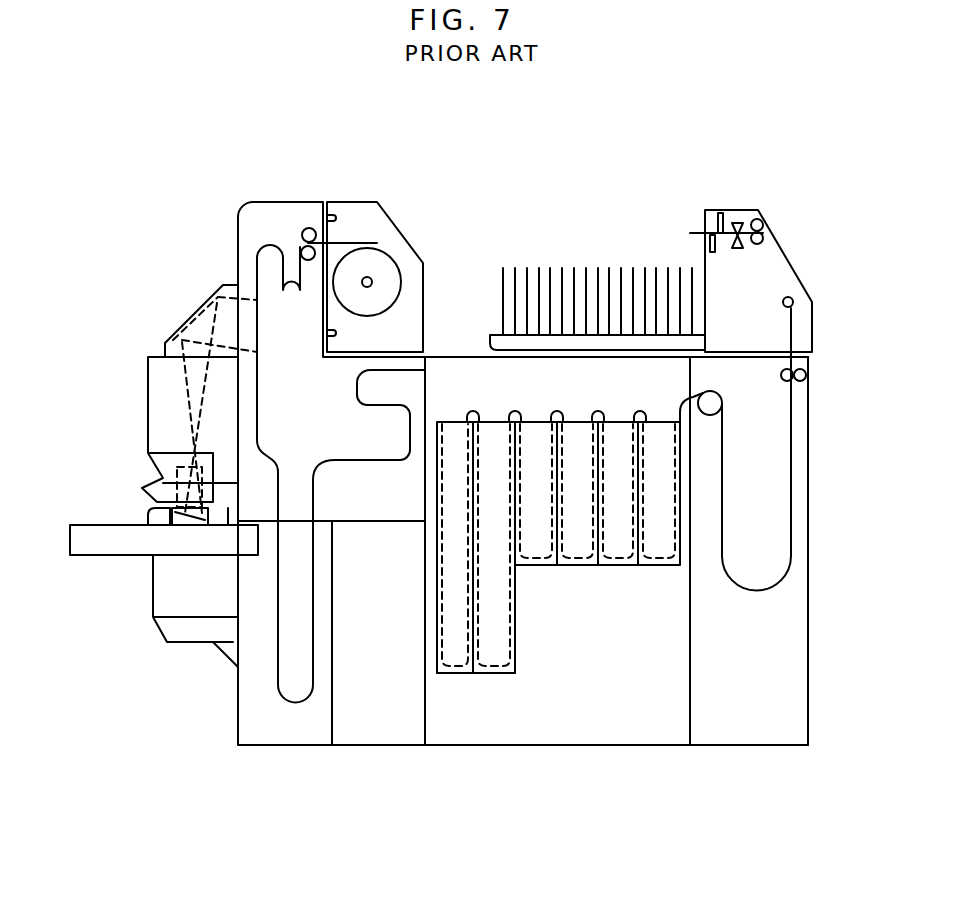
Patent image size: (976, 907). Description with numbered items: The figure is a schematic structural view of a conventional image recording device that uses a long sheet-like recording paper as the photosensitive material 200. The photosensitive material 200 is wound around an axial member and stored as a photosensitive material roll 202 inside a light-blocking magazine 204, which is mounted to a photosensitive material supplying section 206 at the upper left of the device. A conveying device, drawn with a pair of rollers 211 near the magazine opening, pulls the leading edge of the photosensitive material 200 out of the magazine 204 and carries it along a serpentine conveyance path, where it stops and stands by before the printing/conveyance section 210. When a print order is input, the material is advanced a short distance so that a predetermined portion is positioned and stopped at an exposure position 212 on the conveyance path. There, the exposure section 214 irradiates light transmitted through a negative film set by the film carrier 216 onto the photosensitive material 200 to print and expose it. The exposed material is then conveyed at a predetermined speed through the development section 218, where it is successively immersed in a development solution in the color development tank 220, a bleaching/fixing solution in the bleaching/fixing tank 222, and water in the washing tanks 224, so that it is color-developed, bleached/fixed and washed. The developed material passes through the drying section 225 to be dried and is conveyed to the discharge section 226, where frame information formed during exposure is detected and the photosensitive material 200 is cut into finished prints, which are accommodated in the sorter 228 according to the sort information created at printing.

The photosensitive material 200 is at (350, 243).
The photosensitive material roll 202 is at (385, 272).
The light-blocking magazine 204 is at (423, 268).
The photosensitive material supplying section 206 is at (265, 201).
The printing/conveyance section 210 is at (257, 276).
The feed rollers 211 is at (302, 246).
The exposure position 212 is at (258, 347).
The exposure section 214 is at (158, 369).
The film carrier 216 is at (160, 517).
The development section 218 is at (625, 733).
The color development tank 220 is at (452, 673).
The bleaching/fixing tank 222 is at (503, 673).
The washing tanks 224 is at (662, 565).
The drying section 225 is at (787, 637).
The discharge section 226 is at (812, 318).
The sorter 228 is at (603, 272).